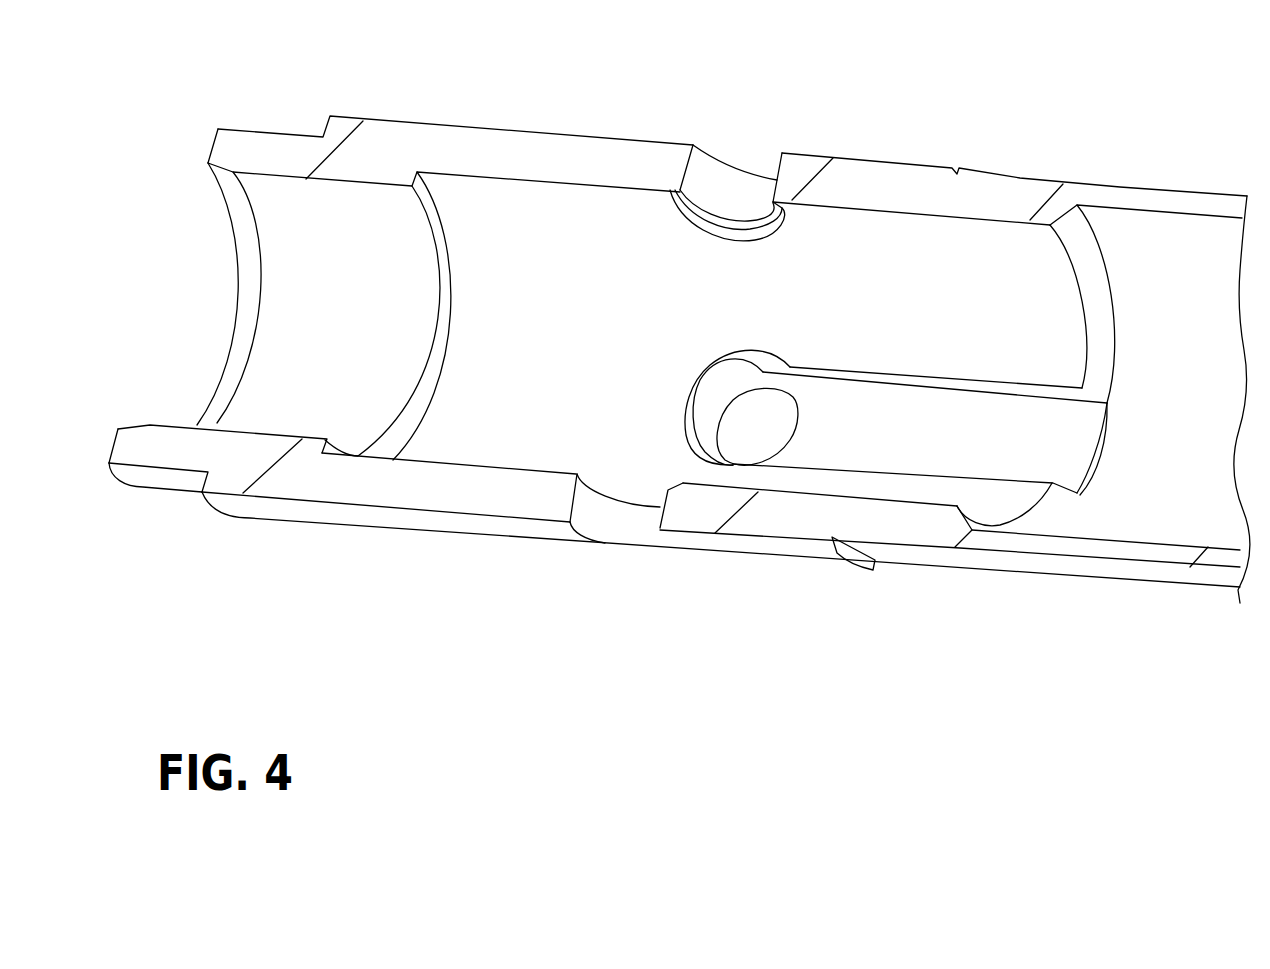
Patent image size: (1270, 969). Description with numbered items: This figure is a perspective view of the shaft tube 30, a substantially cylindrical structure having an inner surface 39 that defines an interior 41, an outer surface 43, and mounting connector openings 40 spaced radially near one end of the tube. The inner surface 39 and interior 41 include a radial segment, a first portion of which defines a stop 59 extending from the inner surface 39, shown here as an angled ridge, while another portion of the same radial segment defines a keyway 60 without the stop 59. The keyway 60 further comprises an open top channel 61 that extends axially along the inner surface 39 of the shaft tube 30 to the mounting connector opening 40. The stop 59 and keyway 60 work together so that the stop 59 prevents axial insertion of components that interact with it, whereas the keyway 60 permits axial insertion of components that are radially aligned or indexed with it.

The shaft tube 30 is at (583, 21).
The inner surface 39 is at (573, 418).
The mounting connector opening 40 is at (728, 165).
The interior 41 is at (569, 357).
The outer surface 43 is at (353, 515).
The stop 59 is at (1088, 225).
The keyway 60 is at (1068, 470).
The open top channel 61 is at (943, 432).